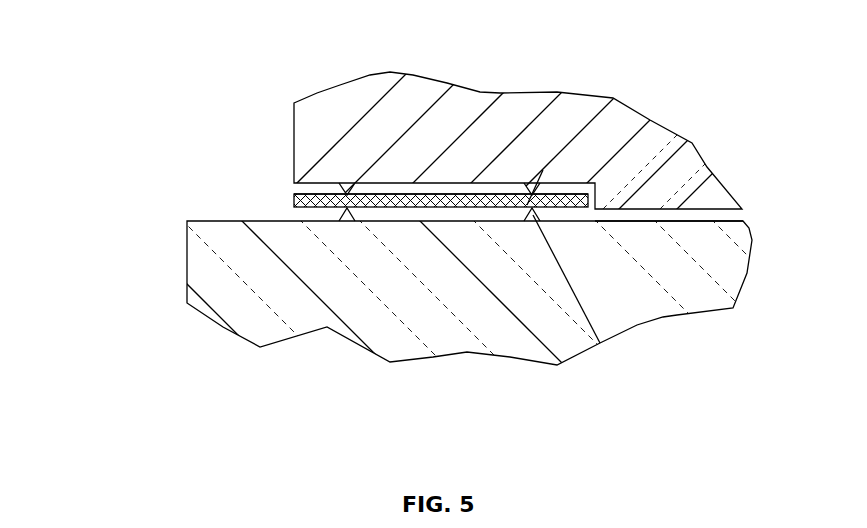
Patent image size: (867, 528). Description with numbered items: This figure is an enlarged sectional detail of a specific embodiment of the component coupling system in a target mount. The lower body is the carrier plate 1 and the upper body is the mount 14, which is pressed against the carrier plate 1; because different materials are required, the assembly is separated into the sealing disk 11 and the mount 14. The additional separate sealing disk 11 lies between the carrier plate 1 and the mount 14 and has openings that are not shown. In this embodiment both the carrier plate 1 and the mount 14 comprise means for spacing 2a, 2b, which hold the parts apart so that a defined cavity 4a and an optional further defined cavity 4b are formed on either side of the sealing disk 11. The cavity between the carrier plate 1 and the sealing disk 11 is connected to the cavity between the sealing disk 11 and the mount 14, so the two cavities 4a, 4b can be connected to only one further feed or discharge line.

The carrier plate 1 is at (227, 238).
The mount 14 is at (327, 112).
The sealing disk 11 is at (292, 200).
The optional further defined cavity 4b is at (445, 213).
The optional further sealing element 2b is at (357, 177).
The first sealing element 2a is at (528, 212).
The defined cavity 4a is at (640, 220).